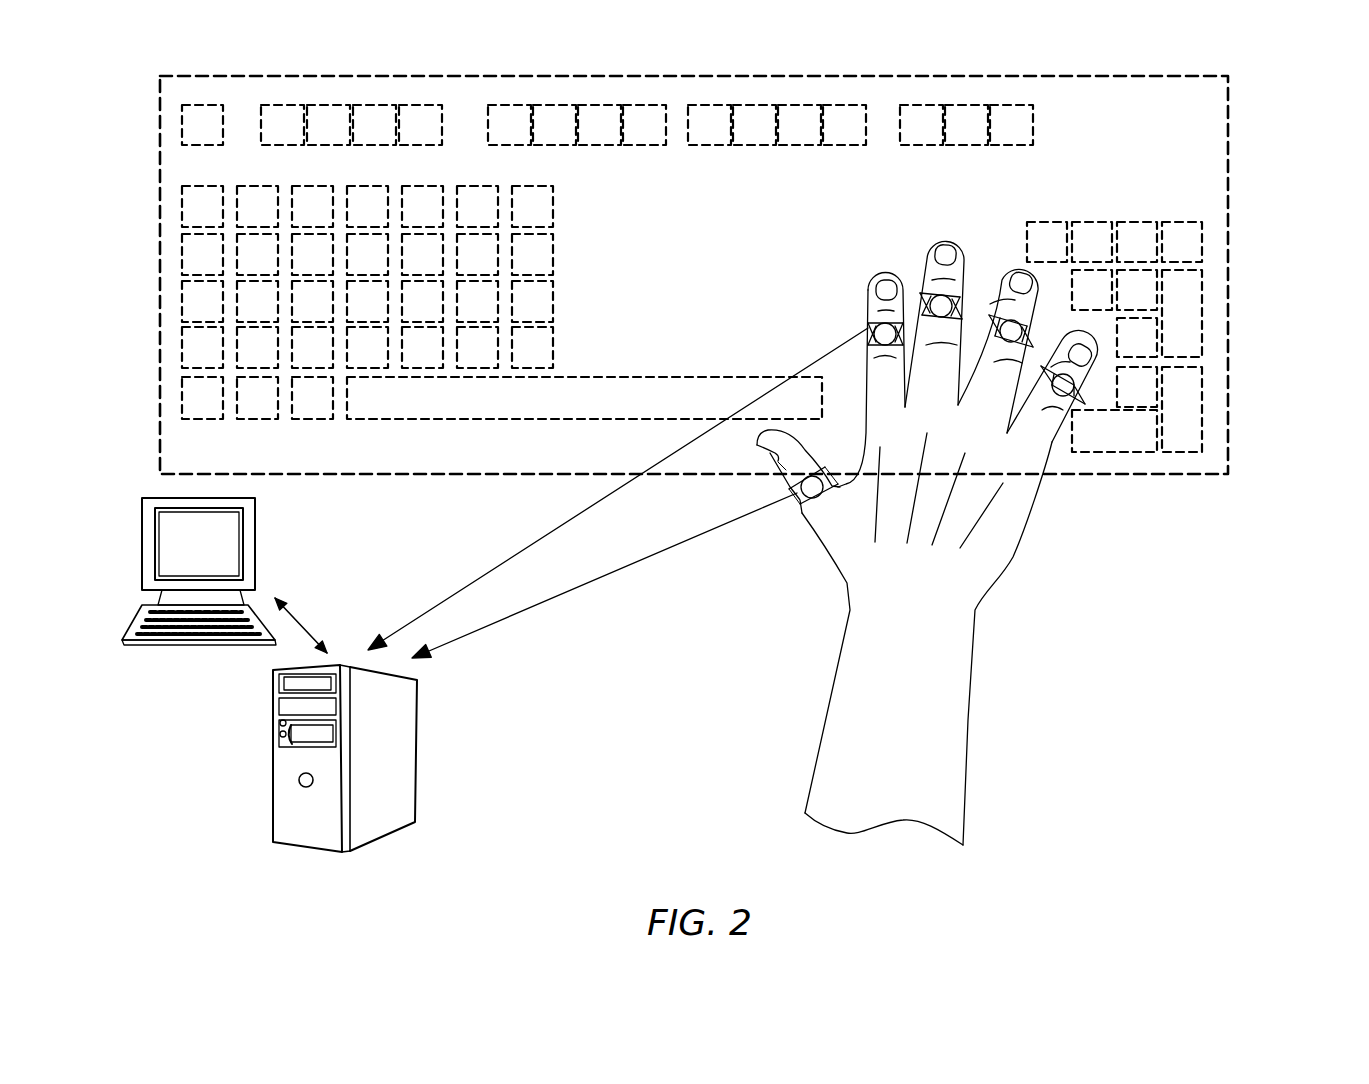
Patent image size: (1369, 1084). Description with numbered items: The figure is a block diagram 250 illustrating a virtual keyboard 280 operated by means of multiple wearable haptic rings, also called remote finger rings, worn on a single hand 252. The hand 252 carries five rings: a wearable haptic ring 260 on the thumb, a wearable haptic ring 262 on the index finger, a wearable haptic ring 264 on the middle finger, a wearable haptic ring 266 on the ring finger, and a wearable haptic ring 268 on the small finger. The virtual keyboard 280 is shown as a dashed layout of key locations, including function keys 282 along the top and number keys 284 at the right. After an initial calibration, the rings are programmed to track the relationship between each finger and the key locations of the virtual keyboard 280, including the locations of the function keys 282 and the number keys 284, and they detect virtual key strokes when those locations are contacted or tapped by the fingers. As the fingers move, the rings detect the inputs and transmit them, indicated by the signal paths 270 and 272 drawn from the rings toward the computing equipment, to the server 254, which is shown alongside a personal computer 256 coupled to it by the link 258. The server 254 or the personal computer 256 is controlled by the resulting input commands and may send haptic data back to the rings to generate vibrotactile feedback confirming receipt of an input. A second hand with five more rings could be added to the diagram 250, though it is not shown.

The block diagram 250 is at (1007, 550).
The hand 252 is at (933, 720).
The server 254 is at (417, 768).
The personal computer 256 is at (170, 547).
The communication link 258 is at (298, 617).
The wearable haptic ring 260 is at (798, 507).
The wearable haptic ring 262 is at (868, 320).
The wearable haptic ring 264 is at (929, 290).
The wearable haptic ring 266 is at (1022, 330).
The wearable haptic ring 268 is at (1078, 389).
The wireless signal 270 is at (512, 558).
The wireless signal 272 is at (537, 607).
The virtual keyboard 280 is at (760, 275).
The function keys 282 is at (1055, 131).
The number keys 284 is at (1095, 282).